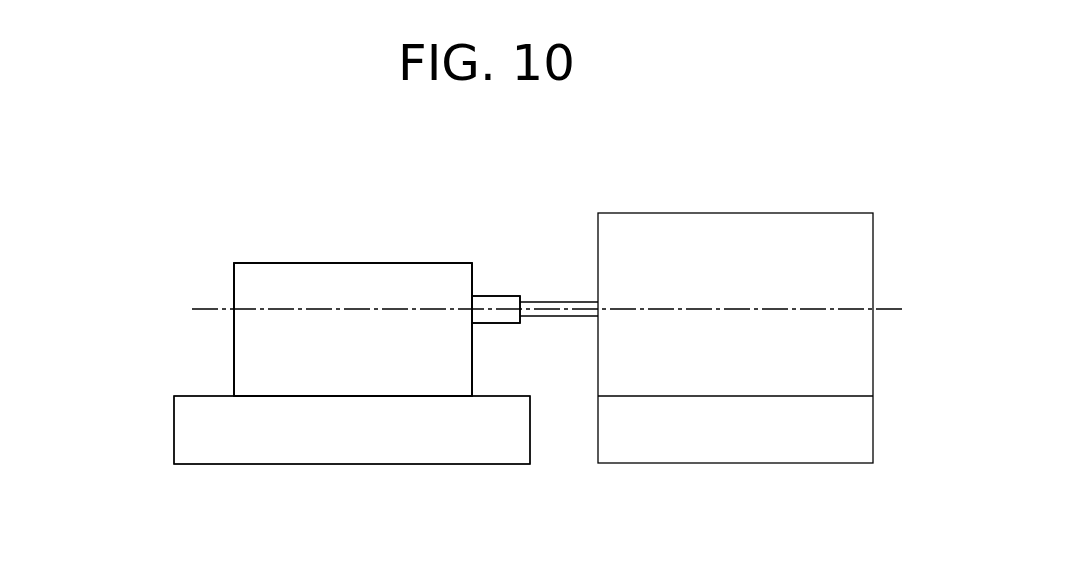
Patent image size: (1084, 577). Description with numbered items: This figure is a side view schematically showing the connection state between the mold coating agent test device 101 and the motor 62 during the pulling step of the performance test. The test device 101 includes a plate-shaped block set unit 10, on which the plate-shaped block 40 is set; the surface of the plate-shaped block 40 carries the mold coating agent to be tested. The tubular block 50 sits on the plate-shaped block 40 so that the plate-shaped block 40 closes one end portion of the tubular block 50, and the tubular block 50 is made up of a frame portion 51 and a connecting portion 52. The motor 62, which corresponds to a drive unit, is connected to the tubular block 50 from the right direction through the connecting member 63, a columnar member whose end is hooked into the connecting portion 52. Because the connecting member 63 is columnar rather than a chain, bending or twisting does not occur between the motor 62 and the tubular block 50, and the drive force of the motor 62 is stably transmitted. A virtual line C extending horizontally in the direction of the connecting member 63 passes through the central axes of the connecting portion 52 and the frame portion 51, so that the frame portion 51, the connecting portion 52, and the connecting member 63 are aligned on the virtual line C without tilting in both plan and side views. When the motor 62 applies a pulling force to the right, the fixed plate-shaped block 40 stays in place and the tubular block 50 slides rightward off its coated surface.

The mold coating agent test device 101 is at (427, 207).
The frame portion 51 is at (282, 275).
The connecting portion 52 is at (493, 303).
The connecting member 63 is at (570, 308).
The motor 62 is at (795, 253).
The virtual line C is at (883, 308).
The tubular block 50 is at (265, 377).
The plate-shaped block 40 is at (257, 443).
The plate-shaped block set unit 10 is at (394, 471).